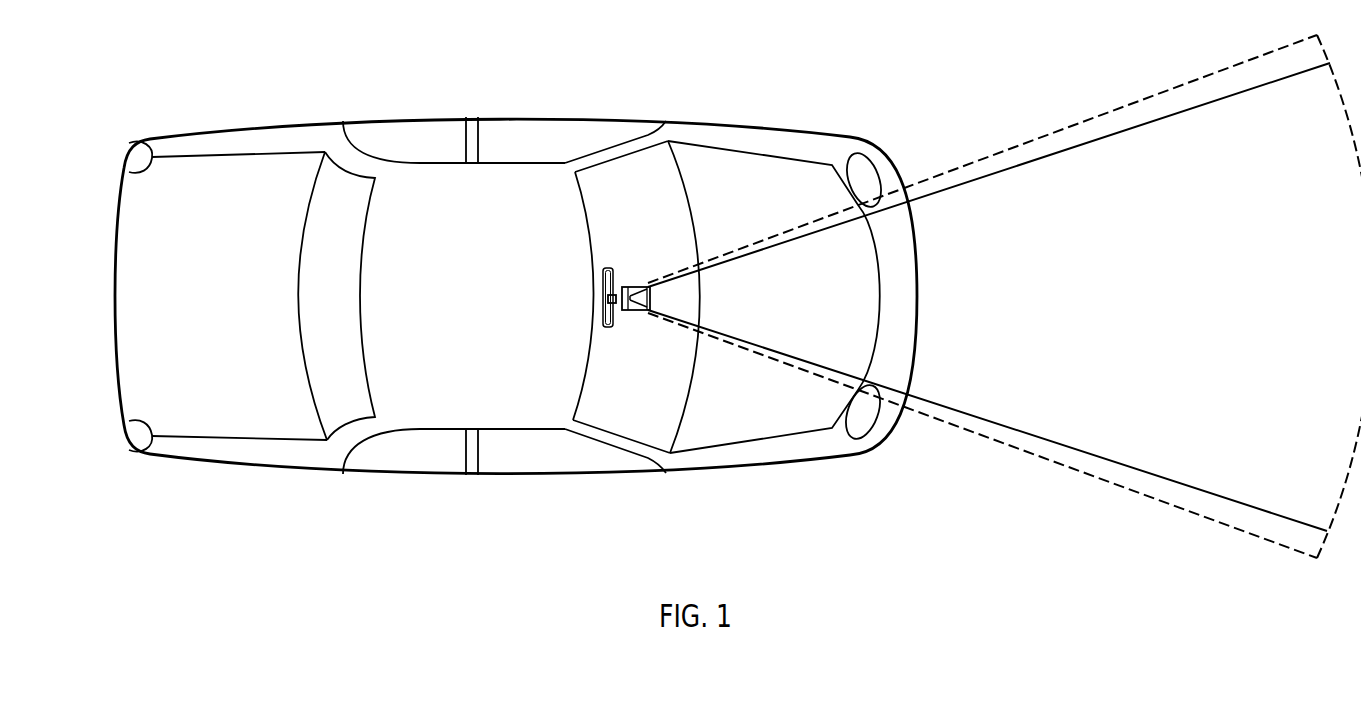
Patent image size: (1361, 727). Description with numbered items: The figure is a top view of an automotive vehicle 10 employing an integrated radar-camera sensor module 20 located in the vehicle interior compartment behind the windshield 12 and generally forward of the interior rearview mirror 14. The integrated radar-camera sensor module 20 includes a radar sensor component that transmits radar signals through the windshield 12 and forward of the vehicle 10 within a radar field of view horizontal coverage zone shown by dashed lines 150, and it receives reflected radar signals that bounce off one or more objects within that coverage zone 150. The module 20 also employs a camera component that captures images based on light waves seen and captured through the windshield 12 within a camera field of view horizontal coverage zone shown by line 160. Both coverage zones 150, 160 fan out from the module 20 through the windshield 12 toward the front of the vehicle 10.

The automotive vehicle 10 is at (516, 254).
The windshield 12 is at (658, 183).
The interior rearview mirror 14 is at (603, 307).
The integrated radar-camera sensor module 20 is at (634, 336).
The radar field of view horizontal coverage zone 150 is at (1070, 127).
The camera field of view horizontal coverage zone 160 is at (1053, 157).